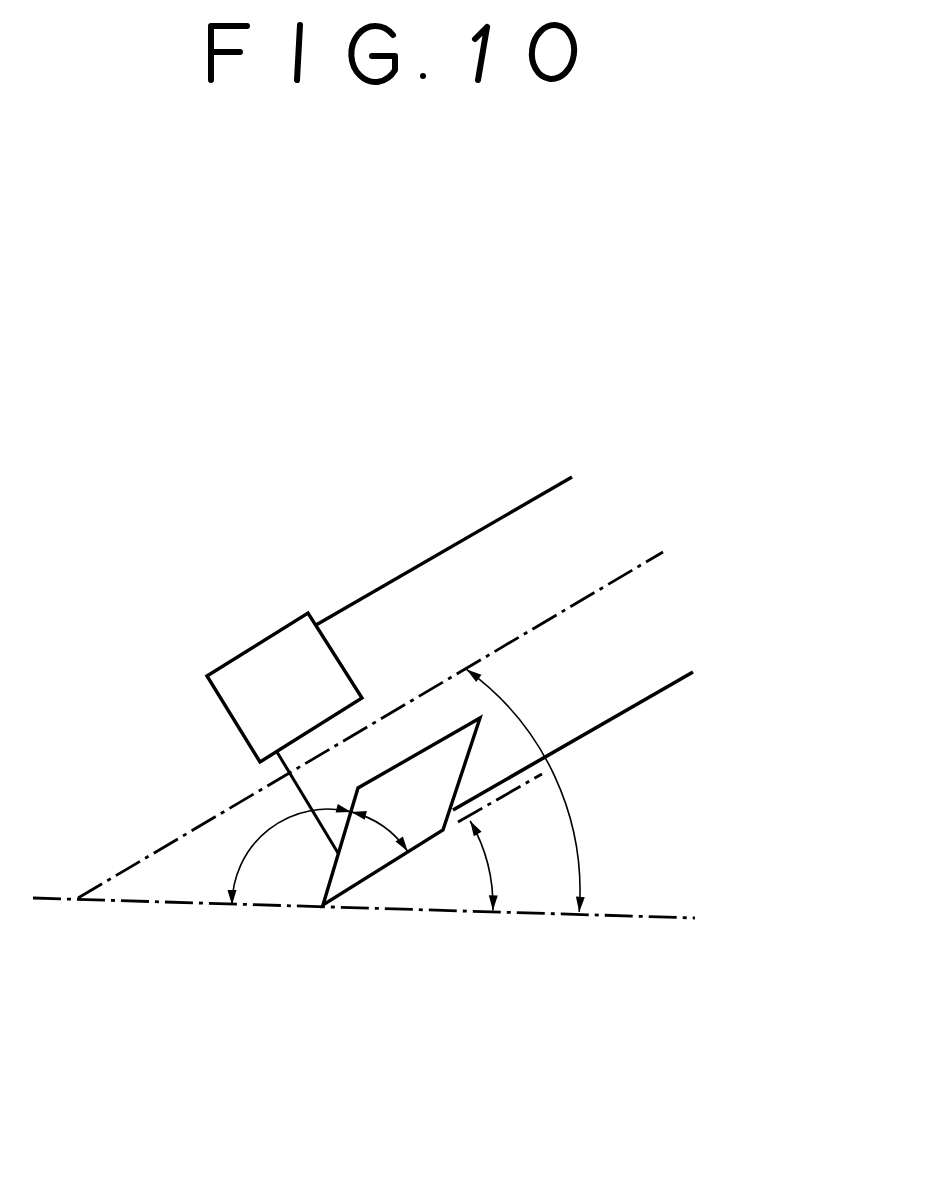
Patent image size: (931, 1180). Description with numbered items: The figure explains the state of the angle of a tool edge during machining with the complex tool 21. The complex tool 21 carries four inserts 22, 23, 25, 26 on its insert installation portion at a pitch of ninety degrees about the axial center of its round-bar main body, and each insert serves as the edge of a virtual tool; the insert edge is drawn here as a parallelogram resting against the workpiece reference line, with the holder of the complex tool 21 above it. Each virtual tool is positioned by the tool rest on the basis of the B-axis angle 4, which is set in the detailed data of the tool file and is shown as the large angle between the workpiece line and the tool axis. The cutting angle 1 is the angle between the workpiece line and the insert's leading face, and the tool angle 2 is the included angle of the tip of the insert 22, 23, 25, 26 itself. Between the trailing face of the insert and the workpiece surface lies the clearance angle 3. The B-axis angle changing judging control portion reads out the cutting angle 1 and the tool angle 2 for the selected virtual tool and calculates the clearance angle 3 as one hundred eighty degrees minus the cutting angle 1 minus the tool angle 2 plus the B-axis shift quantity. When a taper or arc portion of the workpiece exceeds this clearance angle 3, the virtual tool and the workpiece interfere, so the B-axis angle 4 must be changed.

The complex tool 21 is at (643, 700).
The insert 22 is at (465, 876).
The insert 23 is at (465, 876).
The insert 25 is at (465, 876).
The insert 26 is at (343, 872).
The cutting angle 1 is at (290, 854).
The tool angle 2 is at (385, 818).
The clearance angle 3 is at (498, 866).
The B-axis angle 4 is at (534, 791).